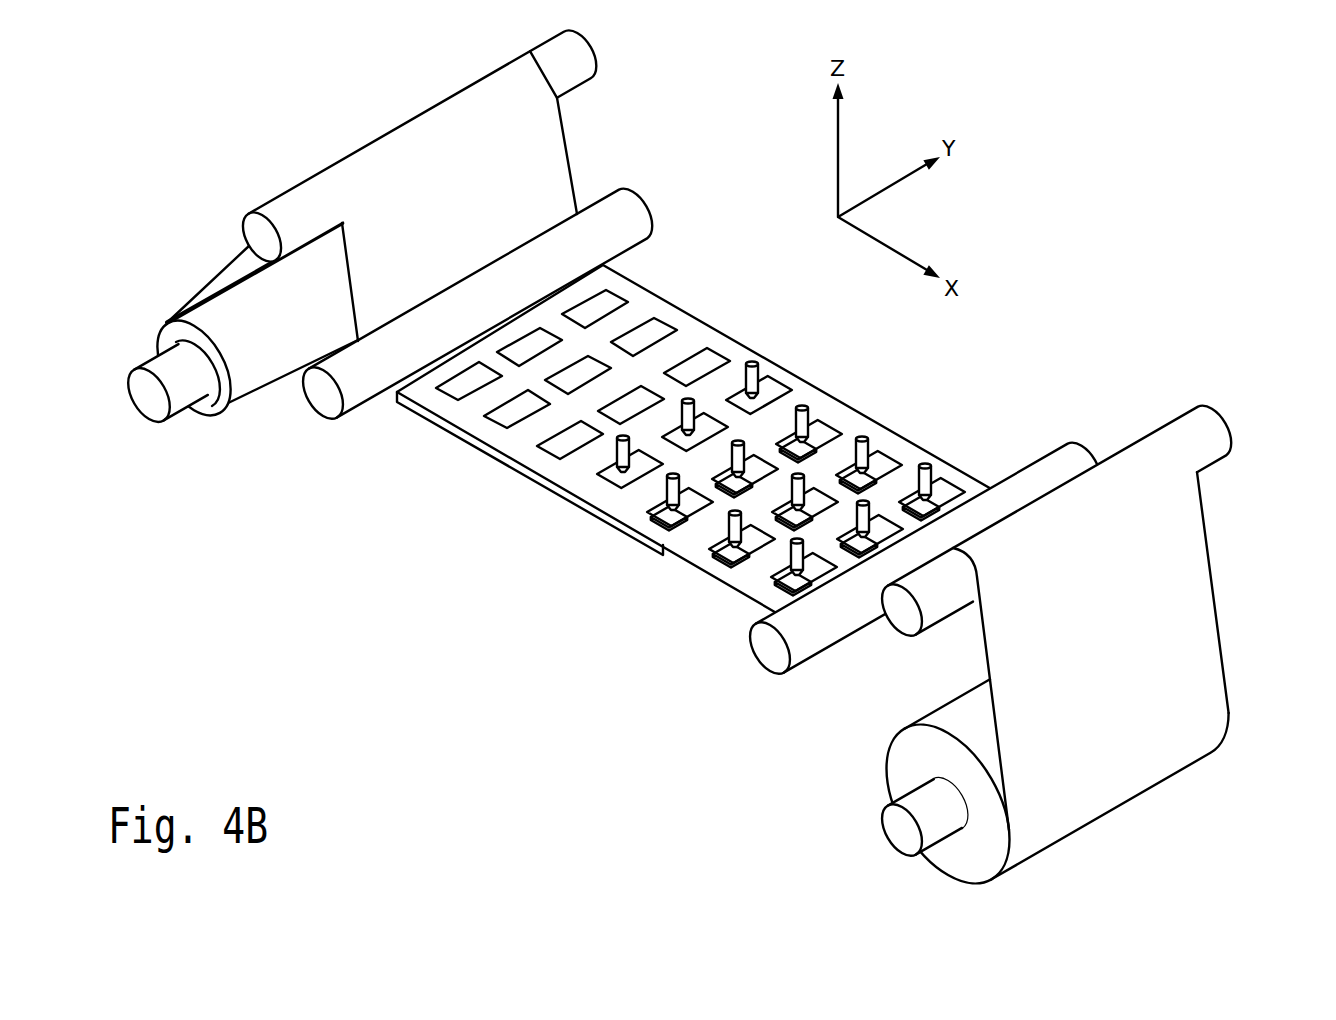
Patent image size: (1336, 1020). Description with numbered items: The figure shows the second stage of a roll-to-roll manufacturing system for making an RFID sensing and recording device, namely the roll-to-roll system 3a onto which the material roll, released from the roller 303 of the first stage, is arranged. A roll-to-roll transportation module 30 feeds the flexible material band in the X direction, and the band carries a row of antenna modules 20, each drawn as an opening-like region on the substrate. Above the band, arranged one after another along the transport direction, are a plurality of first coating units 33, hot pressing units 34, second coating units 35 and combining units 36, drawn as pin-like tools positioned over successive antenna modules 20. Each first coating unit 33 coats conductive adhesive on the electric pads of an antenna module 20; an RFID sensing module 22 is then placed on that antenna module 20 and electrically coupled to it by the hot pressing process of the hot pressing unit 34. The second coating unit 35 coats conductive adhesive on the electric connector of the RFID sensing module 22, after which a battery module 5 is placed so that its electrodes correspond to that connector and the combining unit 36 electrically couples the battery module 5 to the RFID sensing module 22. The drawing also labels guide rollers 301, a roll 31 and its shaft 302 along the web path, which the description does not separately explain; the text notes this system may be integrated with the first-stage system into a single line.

The roll-to-roll system 3a is at (216, 274).
The battery module 5 is at (951, 504).
The antenna module 20 is at (654, 322).
The RFID sensing module 22 is at (810, 445).
The roll-to-roll transportation module 30 is at (125, 362).
The take-up roll 31 is at (893, 774).
The first coating unit 33 is at (754, 362).
The hot pressing unit 34 is at (803, 406).
The second coating unit 35 is at (863, 437).
The combining unit 36 is at (931, 467).
The guide roller 301 is at (573, 58).
The shaft of take-up roll 302 is at (893, 823).
The roller 303 is at (152, 397).